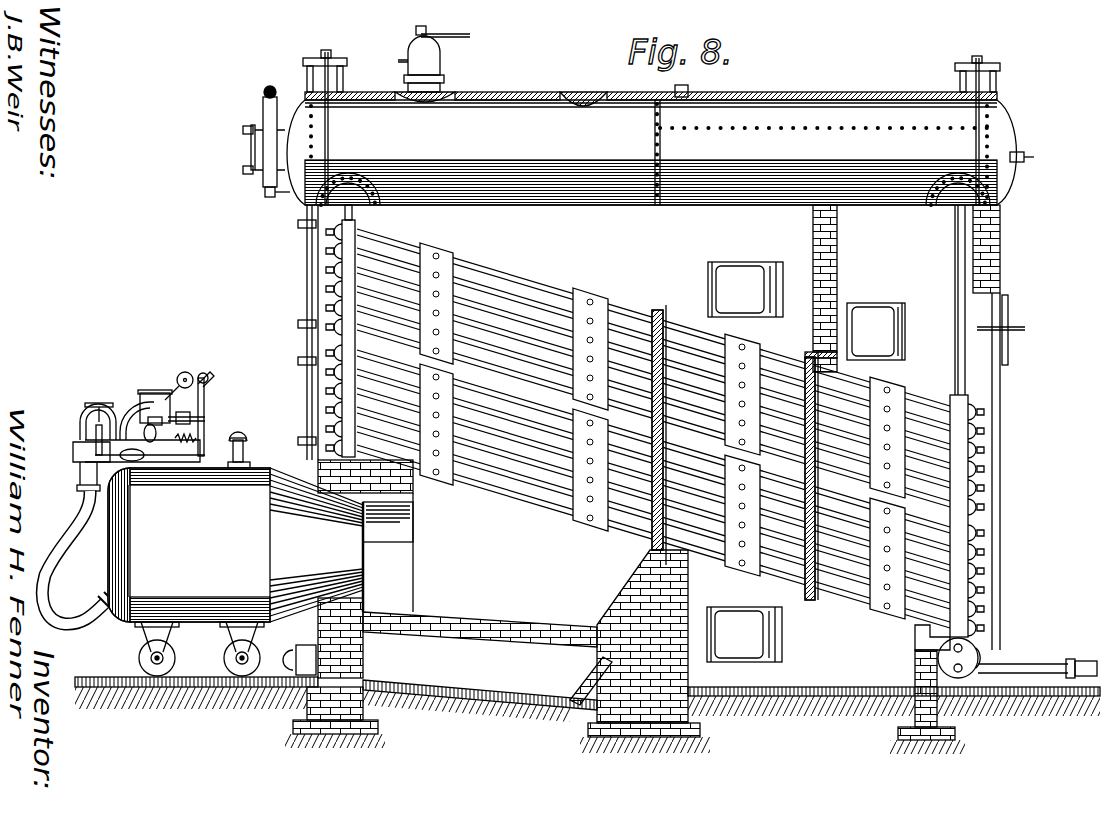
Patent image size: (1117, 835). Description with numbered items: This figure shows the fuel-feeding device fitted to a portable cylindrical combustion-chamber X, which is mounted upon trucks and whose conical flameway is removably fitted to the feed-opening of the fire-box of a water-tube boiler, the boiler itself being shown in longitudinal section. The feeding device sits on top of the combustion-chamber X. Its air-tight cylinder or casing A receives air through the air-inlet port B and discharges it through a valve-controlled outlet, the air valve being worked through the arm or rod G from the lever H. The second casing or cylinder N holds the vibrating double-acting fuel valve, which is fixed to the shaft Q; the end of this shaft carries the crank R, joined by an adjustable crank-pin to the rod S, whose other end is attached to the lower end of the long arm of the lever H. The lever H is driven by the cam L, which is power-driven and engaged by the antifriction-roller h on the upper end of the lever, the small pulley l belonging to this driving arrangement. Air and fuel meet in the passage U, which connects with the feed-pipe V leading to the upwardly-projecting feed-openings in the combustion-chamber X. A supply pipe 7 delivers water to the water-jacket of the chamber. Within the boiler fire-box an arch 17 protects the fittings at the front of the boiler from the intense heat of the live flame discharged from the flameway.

The second casing or cylinder N is at (84, 420).
The shaft Q is at (100, 403).
The air-tight cylinder or casing A is at (134, 412).
The crank R is at (94, 438).
The cam L is at (177, 378).
The small pulley l is at (203, 373).
The antifriction-roller h is at (211, 376).
The lever H is at (204, 400).
The arm or rod G is at (204, 419).
The air-inlet port B is at (144, 436).
The rod S is at (168, 455).
The supply pipe 7 is at (247, 450).
The passage U is at (80, 472).
The feed-pipe V is at (64, 547).
The cylindrical combustion-chamber X is at (235, 572).
The arch 17 is at (418, 498).